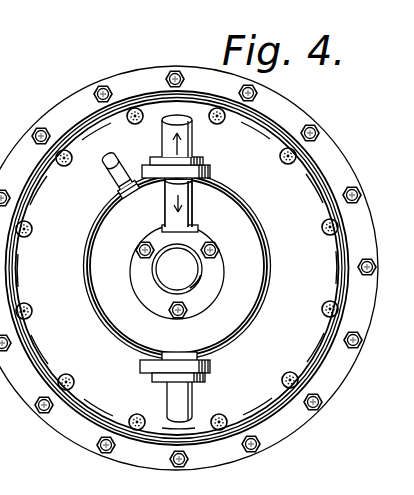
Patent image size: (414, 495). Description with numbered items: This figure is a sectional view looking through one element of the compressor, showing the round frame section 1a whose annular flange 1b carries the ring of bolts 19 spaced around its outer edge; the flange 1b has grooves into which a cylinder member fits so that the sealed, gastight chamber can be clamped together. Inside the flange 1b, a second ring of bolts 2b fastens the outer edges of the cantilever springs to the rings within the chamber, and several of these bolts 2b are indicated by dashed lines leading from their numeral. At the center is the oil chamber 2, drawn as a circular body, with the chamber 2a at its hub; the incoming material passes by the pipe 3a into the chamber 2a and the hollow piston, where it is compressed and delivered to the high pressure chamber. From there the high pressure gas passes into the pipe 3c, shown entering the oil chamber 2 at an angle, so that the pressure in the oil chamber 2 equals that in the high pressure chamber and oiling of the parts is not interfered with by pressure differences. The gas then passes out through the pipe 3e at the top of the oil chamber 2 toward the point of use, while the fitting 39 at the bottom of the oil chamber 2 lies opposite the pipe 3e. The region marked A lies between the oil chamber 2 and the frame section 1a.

The annular flange 1b is at (75, 108).
The section 1a is at (257, 128).
The hex bolts 19 is at (166, 79).
The bolts 2b is at (331, 222).
The oil chamber 2 is at (239, 222).
The chamber A is at (267, 257).
The chamber 2a is at (195, 280).
The pipe 3c is at (110, 172).
The pipe 3e is at (192, 140).
The pipe 3a is at (187, 208).
The lower pipe 39 is at (188, 400).